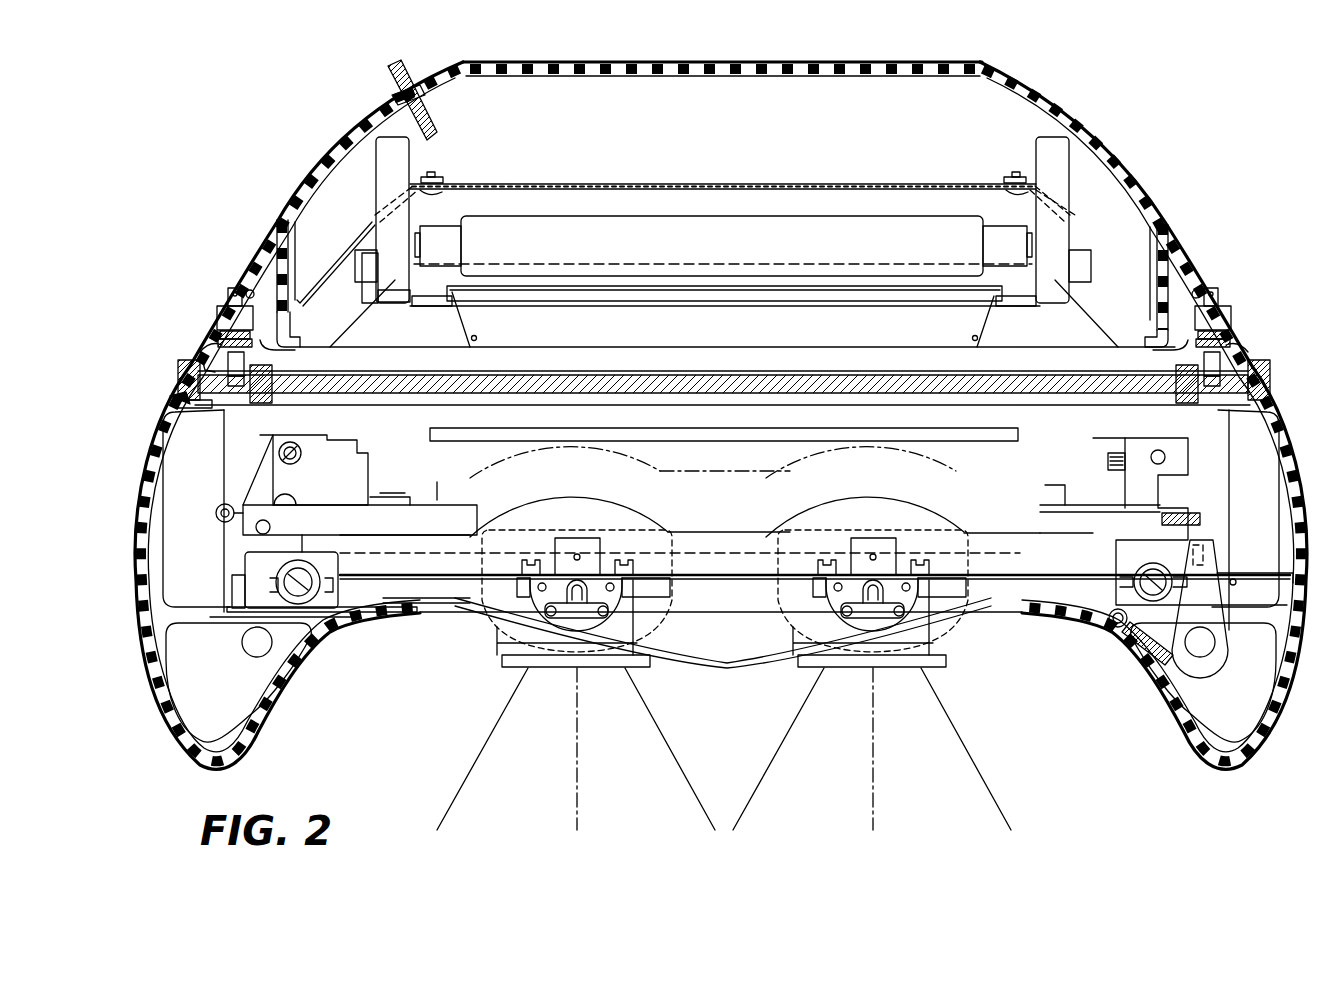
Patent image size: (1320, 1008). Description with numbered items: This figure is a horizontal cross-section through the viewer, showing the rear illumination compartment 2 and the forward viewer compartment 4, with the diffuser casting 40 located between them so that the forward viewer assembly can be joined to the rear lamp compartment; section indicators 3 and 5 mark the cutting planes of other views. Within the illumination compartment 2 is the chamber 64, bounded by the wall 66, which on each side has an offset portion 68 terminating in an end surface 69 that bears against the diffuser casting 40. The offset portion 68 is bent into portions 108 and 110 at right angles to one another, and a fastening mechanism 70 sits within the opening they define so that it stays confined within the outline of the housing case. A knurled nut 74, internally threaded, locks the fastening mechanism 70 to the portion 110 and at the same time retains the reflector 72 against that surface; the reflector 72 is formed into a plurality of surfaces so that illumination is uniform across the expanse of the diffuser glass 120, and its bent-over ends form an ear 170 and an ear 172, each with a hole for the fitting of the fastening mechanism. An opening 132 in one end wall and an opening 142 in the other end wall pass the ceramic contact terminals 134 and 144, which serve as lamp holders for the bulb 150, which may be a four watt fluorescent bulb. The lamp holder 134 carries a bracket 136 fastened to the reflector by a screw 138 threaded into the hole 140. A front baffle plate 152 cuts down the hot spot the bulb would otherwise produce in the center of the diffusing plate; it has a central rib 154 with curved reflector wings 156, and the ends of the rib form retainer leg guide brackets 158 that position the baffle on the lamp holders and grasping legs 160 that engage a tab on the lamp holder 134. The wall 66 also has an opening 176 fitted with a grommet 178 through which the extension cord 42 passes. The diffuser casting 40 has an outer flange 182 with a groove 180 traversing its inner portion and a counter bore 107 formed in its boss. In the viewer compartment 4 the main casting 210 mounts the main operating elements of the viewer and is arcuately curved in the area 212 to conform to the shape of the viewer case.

The illumination compartment 2 is at (317, 167).
The section line 3- 3 is at (292, 422).
The viewer compartment 4 is at (142, 513).
The section line 5- 5 is at (1125, 705).
The diffuser casting 40 is at (186, 367).
The extension cord 42 is at (385, 82).
The chamber 64 is at (745, 140).
The wall 66 is at (277, 250).
The offset portion 68 is at (214, 330).
The end surface 69 is at (185, 385).
The fastening mechanism 70 is at (240, 282).
The reflector 72 is at (340, 257).
The knurled nut 74 is at (205, 350).
The counter bore 107 is at (237, 412).
The portion 108 is at (290, 290).
The portion 110 is at (262, 348).
The diffuser glass 120 is at (727, 385).
The opening 132 is at (370, 228).
The ceramic contact terminal 134 is at (406, 169).
The bracket 136 is at (420, 182).
The screw 138 is at (432, 190).
The hole 140 is at (440, 184).
The opening 142 is at (1070, 224).
The ceramic contact terminal 144 is at (1068, 168).
The bulb 150 is at (692, 250).
The front baffle plate 152 is at (742, 300).
The rib 154 is at (427, 306).
The reflector wing 156 is at (845, 300).
The retainer leg guide bracket 158 is at (392, 304).
The grasping leg 160 is at (366, 298).
The ear 170 is at (300, 350).
The ear 172 is at (1170, 350).
The opening 176 is at (414, 86).
The grommet 178 is at (392, 95).
The groove 180 is at (178, 408).
The outer flange 182 is at (168, 400).
The main casting 210 is at (718, 666).
The arcuately curved area 212 is at (755, 662).